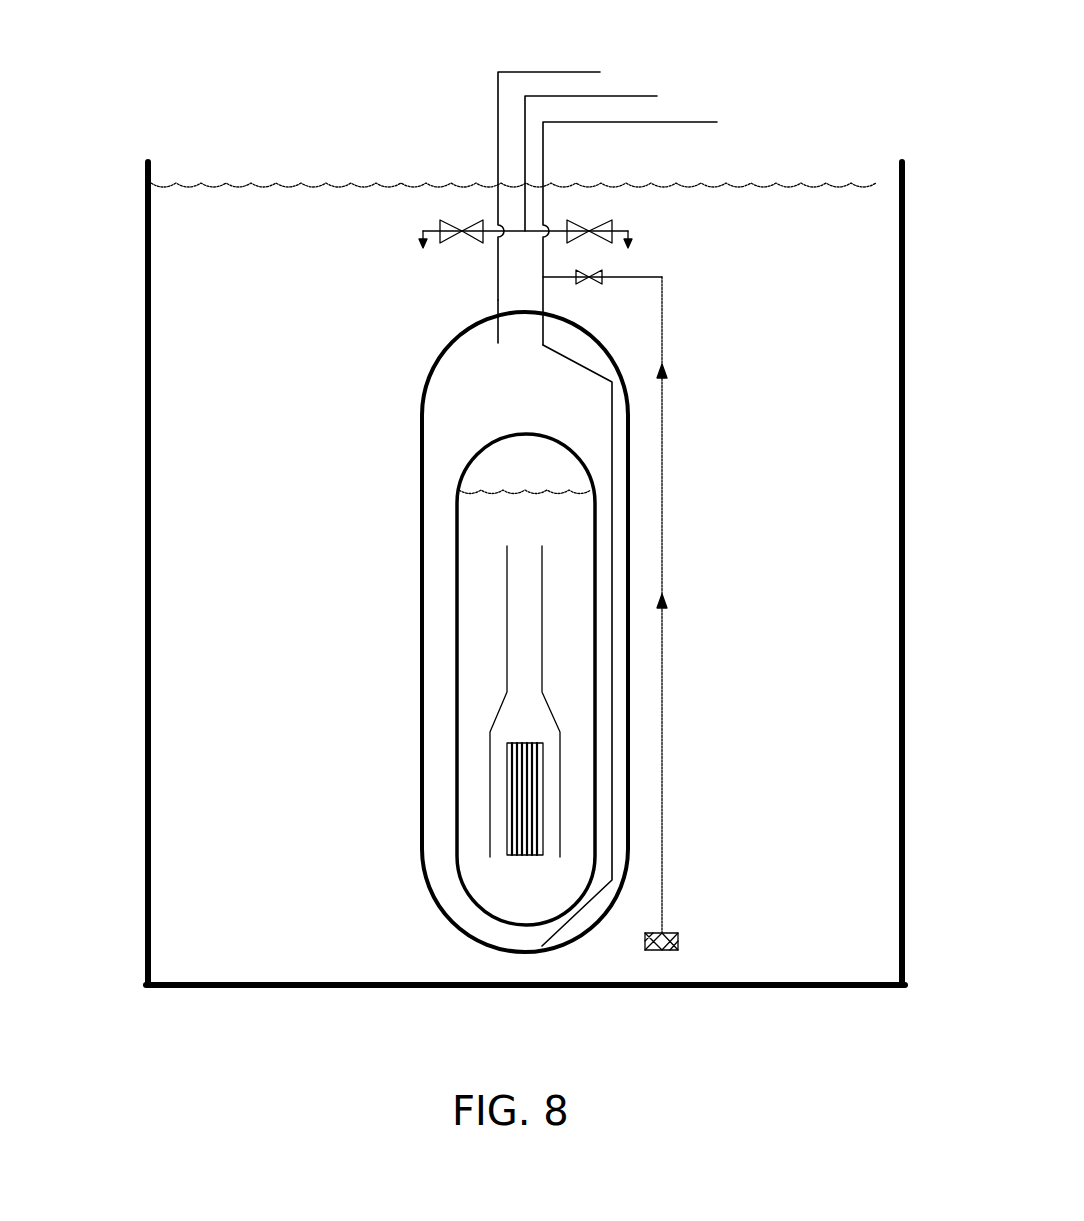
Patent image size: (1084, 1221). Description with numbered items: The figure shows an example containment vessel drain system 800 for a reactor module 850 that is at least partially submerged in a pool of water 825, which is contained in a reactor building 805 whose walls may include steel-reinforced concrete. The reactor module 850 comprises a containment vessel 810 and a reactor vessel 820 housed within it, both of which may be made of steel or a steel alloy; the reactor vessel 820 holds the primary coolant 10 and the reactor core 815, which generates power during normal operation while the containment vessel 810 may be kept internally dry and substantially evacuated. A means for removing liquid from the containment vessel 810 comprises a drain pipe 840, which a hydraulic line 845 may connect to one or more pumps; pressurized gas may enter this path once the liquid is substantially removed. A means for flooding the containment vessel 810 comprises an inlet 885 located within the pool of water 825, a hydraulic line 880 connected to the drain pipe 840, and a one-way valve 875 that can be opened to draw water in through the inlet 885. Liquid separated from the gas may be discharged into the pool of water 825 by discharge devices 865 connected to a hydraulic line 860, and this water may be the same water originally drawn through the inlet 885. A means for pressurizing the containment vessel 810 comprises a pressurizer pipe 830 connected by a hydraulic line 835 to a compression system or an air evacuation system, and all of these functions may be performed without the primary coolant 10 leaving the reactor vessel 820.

The containment vessel drain system 800 is at (496, 492).
The reactor building 805 is at (146, 380).
The pool of water 825 is at (513, 416).
The reactor module 850 is at (460, 626).
The containment vessel 810 is at (442, 350).
The reactor vessel 820 is at (492, 446).
The primary coolant 10 is at (525, 681).
The reactor core 815 is at (522, 857).
The pressurizer pipe 830 is at (500, 344).
The drain pipe 840 is at (610, 445).
The hydraulic line 835 is at (600, 72).
The hydraulic line 860 is at (633, 97).
The hydraulic line 845 is at (693, 122).
The discharge devices 865 is at (440, 225).
The valve 875 is at (582, 280).
The hydraulic line 880 is at (665, 558).
The inlet 885 is at (680, 940).